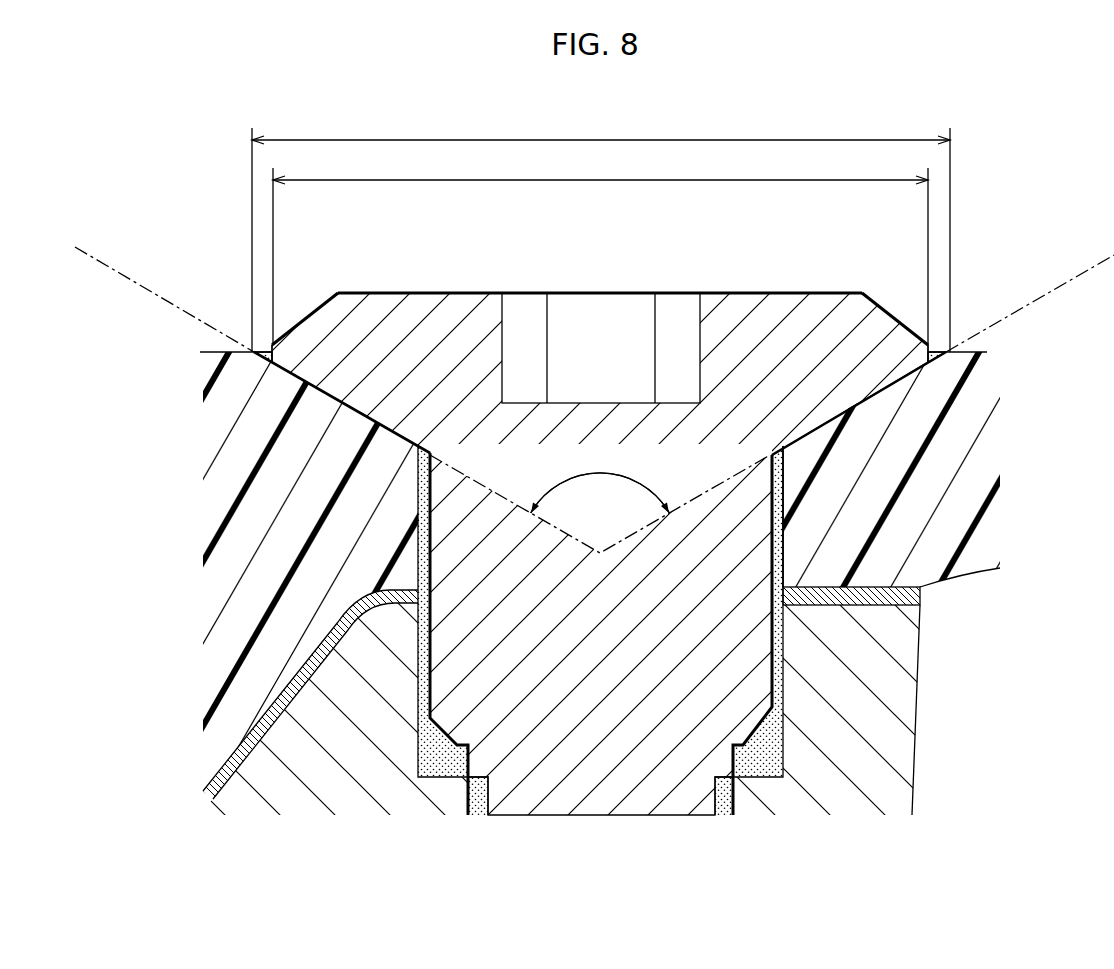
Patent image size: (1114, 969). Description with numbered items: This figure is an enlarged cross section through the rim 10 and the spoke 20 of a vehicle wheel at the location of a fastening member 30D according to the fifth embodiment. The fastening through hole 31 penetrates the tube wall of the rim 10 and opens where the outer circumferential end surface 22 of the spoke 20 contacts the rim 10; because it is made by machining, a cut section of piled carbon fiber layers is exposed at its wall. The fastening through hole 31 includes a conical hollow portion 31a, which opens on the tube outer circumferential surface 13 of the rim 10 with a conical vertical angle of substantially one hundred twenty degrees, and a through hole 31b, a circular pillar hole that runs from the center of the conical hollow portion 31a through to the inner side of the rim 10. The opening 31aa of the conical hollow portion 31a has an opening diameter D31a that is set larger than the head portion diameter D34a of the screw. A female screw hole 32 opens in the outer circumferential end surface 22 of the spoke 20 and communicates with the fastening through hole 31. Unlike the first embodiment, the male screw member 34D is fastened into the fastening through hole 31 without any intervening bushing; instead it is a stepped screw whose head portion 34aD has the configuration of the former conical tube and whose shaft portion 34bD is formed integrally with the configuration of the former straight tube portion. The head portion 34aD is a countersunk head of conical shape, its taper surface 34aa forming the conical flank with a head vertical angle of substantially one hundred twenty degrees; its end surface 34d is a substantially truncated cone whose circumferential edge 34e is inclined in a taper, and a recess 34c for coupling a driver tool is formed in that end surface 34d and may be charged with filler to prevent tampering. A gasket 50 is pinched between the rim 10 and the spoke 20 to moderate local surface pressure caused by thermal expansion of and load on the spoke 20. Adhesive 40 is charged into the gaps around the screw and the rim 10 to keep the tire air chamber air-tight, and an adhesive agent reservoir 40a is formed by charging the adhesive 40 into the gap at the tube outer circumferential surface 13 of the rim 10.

The fastening member 30D is at (190, 211).
The opening diameter D31a is at (601, 233).
The head portion diameter D34a is at (600, 249).
The tube outer circumferential surface 13 is at (217, 352).
The outer circumferential end surface 22 is at (260, 738).
The gasket 50 is at (297, 683).
The fastening through hole 31 is at (1062, 417).
The conical hollow portion 31a is at (915, 372).
The opening 31aa is at (937, 352).
The through hole 31b is at (790, 498).
The rim 10 is at (957, 587).
The spoke 20 is at (917, 708).
The male screw member 34D is at (633, 293).
The head portion 34aD is at (433, 310).
The shaft portion 34bD is at (577, 772).
The end surface 34d is at (373, 292).
The circumferential edge 34e is at (905, 327).
The recess 34c is at (700, 325).
The taper surface 34aa is at (282, 368).
The adhesive agent reservoir 40a is at (258, 350).
The adhesive 40 is at (440, 756).
The female screw hole 32 is at (724, 795).